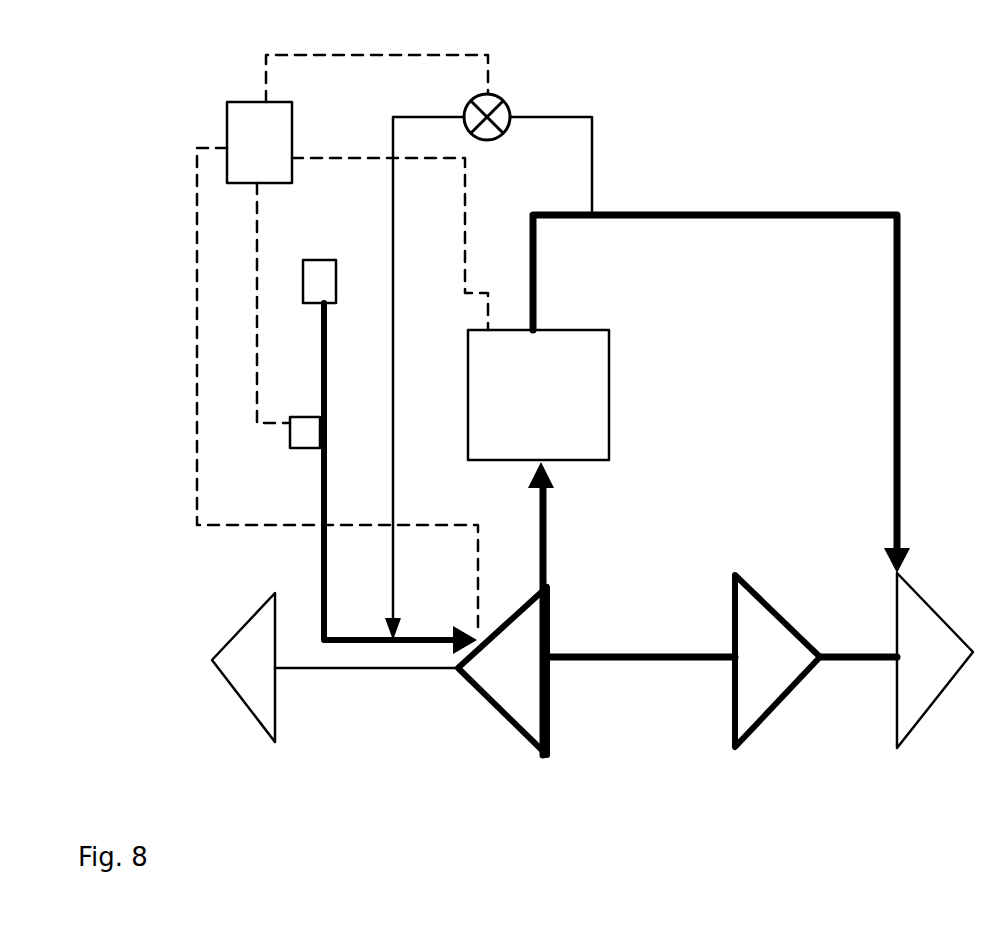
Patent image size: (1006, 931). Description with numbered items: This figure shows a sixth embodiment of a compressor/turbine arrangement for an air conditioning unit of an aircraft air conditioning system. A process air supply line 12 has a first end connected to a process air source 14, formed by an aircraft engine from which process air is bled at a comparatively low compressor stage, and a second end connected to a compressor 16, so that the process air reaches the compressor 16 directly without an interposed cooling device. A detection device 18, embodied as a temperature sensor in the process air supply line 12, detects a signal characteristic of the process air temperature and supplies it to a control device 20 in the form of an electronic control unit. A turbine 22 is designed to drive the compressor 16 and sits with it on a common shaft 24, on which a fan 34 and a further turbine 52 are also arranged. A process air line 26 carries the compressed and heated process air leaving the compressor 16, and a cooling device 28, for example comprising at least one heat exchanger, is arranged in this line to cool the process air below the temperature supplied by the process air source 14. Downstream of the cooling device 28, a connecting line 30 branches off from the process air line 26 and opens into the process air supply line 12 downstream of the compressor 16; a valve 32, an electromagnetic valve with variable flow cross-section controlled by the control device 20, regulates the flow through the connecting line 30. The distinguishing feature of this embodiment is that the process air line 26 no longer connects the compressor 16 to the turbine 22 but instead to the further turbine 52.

The process air supply line 12 is at (330, 340).
The process air source 14 is at (315, 270).
The compressor 16 is at (490, 695).
The detection device 18 is at (300, 440).
The control device 20 is at (240, 118).
The turbine 22 is at (767, 690).
The common shaft 24 is at (633, 672).
The process air line 26 is at (668, 212).
The cooling device 28 is at (595, 385).
The connecting line 30 is at (570, 112).
The valve 32 is at (500, 99).
The fan 34 is at (265, 730).
The further turbine 52 is at (922, 697).